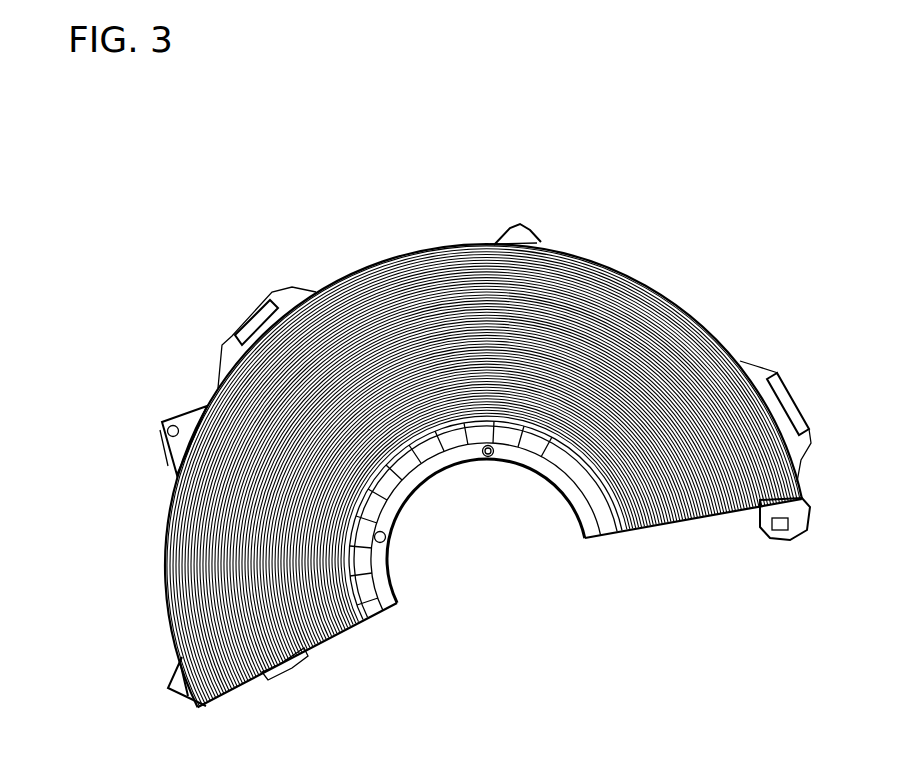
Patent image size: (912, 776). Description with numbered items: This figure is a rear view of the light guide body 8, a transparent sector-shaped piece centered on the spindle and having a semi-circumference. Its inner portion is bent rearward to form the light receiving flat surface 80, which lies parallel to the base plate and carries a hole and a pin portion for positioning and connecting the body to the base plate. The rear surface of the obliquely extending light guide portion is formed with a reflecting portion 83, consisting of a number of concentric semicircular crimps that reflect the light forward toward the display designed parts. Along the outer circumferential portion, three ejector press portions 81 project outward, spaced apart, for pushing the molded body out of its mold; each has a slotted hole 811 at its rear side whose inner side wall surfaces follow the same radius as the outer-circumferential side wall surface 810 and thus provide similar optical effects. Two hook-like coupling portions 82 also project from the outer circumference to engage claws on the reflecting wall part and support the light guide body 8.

The light guide body 8 is at (168, 561).
The light receiving flat surface 80 is at (485, 520).
The ejector press portion 81 is at (522, 224).
The slotted hole 811 is at (490, 243).
The coupling portion 82 is at (272, 298).
The reflecting portion 83 is at (366, 650).
The outer-circumferential side wall surface 810 is at (398, 248).